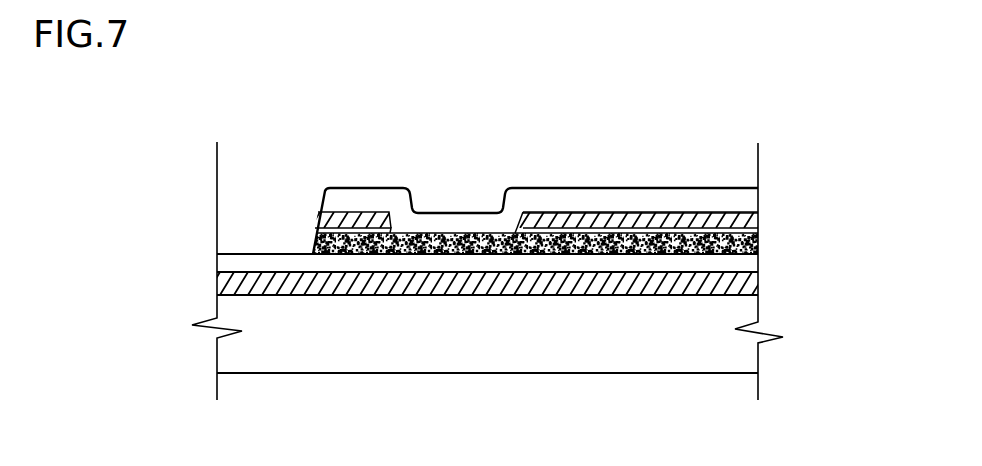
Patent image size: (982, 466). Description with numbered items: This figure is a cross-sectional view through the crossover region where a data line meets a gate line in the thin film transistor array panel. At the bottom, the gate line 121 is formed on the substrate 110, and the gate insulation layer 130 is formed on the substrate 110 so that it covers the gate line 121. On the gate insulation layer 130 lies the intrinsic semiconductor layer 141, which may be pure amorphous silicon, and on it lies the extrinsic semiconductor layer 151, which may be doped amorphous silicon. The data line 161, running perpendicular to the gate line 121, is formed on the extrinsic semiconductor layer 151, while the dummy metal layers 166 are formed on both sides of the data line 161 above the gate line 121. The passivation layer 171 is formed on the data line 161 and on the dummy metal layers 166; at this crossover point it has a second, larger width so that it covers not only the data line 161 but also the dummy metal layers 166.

The substrate 110 is at (395, 330).
The gate line 121 is at (598, 283).
The gate insulation layer 130 is at (720, 270).
The intrinsic semiconductor layer 141 is at (671, 232).
The extrinsic semiconductor layer 151 is at (331, 212).
The data line 161 is at (547, 212).
The dummy metal layers 166 is at (382, 212).
The passivation layer 171 is at (520, 200).